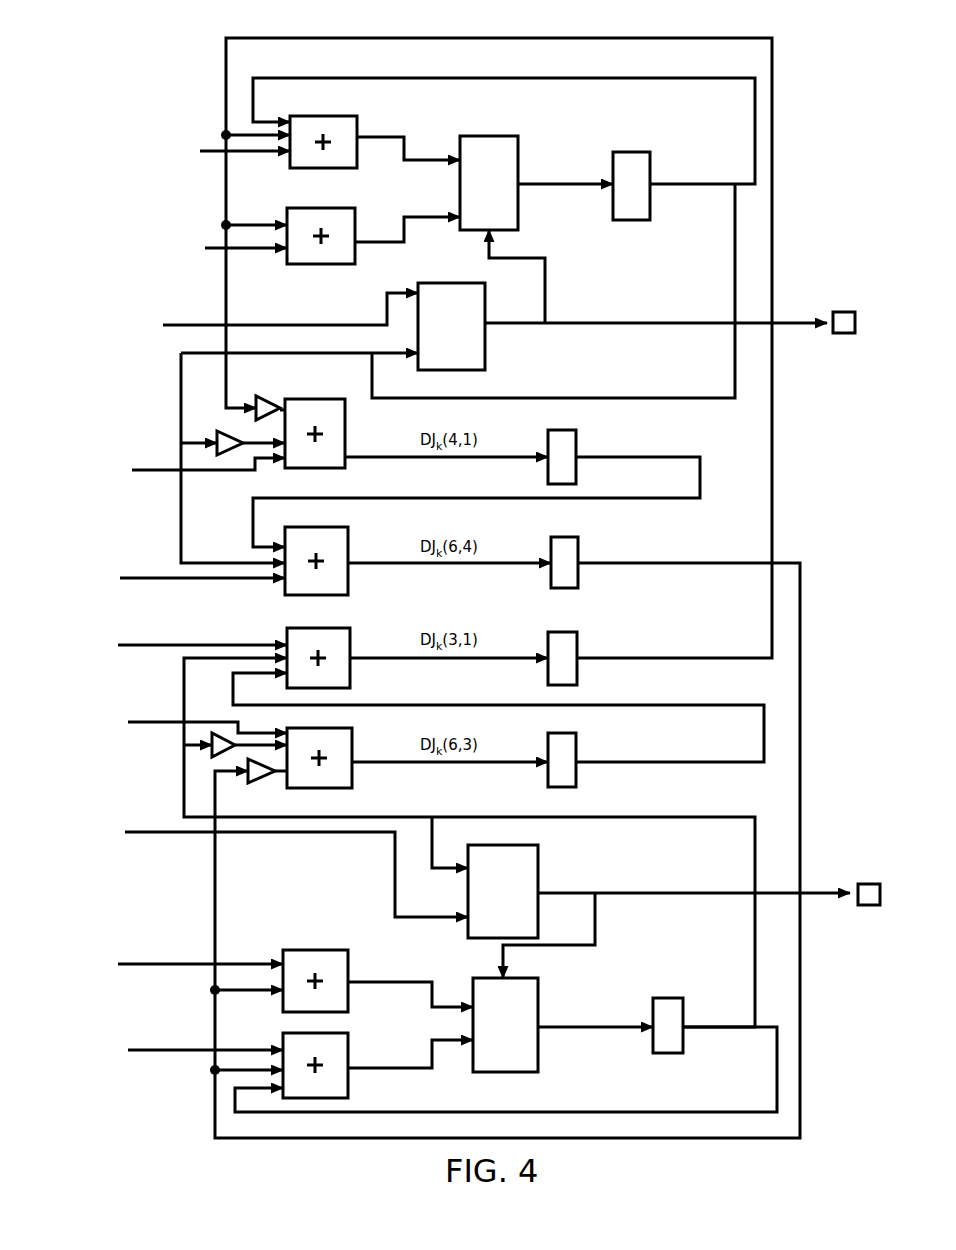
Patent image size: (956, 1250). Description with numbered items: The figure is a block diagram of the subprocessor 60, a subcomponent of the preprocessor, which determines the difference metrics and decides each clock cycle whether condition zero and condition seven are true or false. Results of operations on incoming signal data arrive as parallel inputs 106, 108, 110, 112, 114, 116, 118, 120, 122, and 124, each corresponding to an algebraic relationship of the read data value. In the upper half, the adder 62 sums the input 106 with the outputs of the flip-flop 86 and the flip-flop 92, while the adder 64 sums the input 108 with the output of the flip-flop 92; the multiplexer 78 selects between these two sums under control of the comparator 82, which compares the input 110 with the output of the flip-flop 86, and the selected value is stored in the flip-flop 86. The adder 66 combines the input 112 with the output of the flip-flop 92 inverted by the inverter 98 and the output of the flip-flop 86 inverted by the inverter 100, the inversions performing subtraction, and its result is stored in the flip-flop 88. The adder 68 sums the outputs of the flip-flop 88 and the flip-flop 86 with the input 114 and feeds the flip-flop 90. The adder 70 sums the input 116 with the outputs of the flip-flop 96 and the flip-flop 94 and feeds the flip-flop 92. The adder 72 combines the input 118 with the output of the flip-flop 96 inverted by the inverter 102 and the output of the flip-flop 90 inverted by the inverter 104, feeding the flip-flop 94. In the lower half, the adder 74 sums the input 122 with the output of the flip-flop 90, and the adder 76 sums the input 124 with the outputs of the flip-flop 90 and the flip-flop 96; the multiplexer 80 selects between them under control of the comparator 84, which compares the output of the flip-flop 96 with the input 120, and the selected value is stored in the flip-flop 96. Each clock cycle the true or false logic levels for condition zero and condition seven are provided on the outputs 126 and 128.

The subprocessor 60 is at (128, 120).
The adder 62 is at (340, 126).
The adder 64 is at (340, 220).
The adder 66 is at (333, 440).
The adder 68 is at (335, 556).
The adder 70 is at (333, 652).
The adder 72 is at (333, 755).
The adder 74 is at (335, 978).
The adder 76 is at (335, 1065).
The multiplexer 78 is at (492, 148).
The multiplexer 80 is at (520, 1050).
The comparator 82 is at (476, 340).
The comparator 84 is at (530, 880).
The flip-flop 86 is at (642, 192).
The flip-flop 88 is at (562, 443).
The flip-flop 90 is at (562, 550).
The flip-flop 92 is at (562, 642).
The flip-flop 94 is at (562, 742).
The flip-flop 96 is at (680, 1000).
The inverter 98 is at (276, 406).
The inverter 100 is at (225, 440).
The inverter 102 is at (232, 757).
The inverter 104 is at (268, 776).
The input 106 is at (212, 152).
The input 108 is at (212, 250).
The input 110 is at (195, 330).
The input 112 is at (160, 473).
The input 114 is at (160, 580).
The input 116 is at (160, 648).
The input 118 is at (160, 724).
The input 120 is at (158, 834).
The input 122 is at (158, 966).
The input 124 is at (153, 1053).
The output 126 is at (781, 320).
The output 128 is at (816, 888).